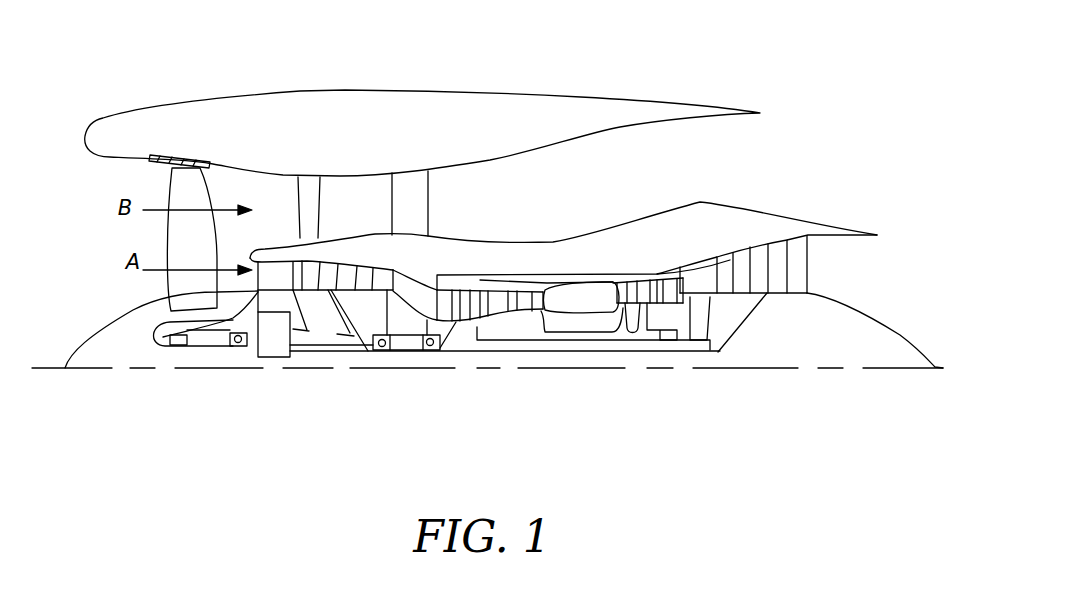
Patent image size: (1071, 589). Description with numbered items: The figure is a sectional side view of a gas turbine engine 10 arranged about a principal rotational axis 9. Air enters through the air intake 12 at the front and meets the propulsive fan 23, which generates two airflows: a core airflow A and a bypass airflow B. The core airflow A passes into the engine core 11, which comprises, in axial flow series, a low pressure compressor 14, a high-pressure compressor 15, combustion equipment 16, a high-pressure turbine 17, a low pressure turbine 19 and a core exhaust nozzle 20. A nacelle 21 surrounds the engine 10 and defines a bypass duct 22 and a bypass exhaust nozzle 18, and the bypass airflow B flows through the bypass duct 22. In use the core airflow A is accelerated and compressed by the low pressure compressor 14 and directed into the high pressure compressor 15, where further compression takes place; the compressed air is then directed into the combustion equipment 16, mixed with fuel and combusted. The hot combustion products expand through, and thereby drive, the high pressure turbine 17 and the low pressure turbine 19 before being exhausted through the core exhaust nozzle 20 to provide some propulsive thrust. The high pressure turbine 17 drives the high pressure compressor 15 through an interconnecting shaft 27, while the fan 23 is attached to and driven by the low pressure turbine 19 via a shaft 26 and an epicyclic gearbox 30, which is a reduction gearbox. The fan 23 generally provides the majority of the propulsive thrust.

The principal rotational axis 9 is at (813, 373).
The gas turbine engine 10 is at (166, 105).
The core 11 is at (542, 265).
The air intake 12 is at (110, 173).
The low pressure compressor 14 is at (346, 266).
The high-pressure compressor 15 is at (495, 302).
The combustion equipment 16 is at (573, 302).
The high-pressure turbine 17 is at (638, 290).
The bypass exhaust nozzle 18 is at (762, 152).
The low pressure turbine 19 is at (780, 250).
The core exhaust nozzle 20 is at (838, 268).
The nacelle 21 is at (405, 104).
The bypass duct 22 is at (701, 171).
The propulsive fan 23 is at (168, 232).
The shaft 26 is at (490, 352).
The interconnecting shaft 27 is at (533, 340).
The epicyclic gearbox 30 is at (272, 347).